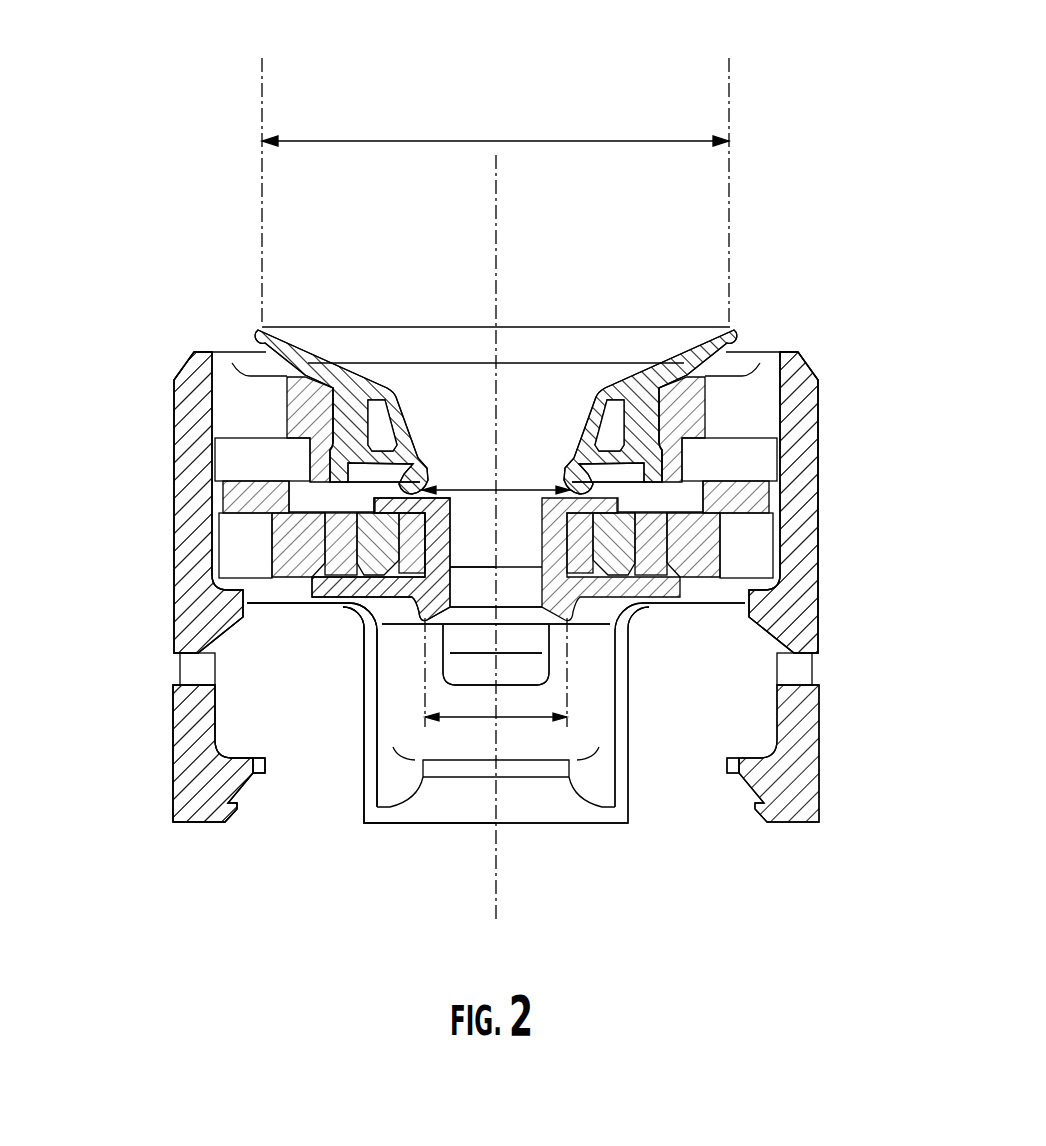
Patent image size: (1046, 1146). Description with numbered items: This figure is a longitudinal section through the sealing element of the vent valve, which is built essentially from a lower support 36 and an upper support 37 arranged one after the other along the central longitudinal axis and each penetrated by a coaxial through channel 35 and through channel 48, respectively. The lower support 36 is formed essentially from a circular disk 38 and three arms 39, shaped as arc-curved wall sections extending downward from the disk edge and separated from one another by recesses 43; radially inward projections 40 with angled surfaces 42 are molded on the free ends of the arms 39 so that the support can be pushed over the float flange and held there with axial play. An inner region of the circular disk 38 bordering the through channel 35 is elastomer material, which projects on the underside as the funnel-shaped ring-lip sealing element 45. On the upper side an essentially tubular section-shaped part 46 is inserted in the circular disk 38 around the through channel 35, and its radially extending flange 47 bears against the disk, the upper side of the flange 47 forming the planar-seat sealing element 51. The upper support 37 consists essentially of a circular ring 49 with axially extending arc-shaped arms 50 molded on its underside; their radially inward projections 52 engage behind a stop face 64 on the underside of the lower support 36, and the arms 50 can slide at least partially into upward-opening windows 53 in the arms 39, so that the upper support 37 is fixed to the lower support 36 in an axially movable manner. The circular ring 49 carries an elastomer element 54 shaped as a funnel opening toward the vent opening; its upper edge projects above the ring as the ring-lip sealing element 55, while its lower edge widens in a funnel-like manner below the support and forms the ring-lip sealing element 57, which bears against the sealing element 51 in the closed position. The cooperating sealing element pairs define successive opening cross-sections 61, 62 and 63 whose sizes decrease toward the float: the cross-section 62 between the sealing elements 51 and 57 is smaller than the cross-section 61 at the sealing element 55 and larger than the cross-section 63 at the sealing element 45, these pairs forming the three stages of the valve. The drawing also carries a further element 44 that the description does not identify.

The through channel 35 is at (475, 595).
The lower support 36 is at (173, 718).
The upper support 37 is at (798, 462).
The circular disk 38 is at (689, 548).
The arms 39 is at (190, 747).
The projections 40 is at (234, 771).
The angled surfaces 42 is at (210, 820).
The recesses 43 is at (362, 695).
The boss 44 is at (421, 532).
The sealing element 45 is at (392, 640).
The tubular section-shaped part 46 is at (553, 538).
The flange 47 is at (390, 497).
The through channel 48 is at (563, 398).
The circular ring 49 is at (242, 402).
The arms 50 is at (200, 473).
The sealing element 51 is at (608, 500).
The projections 52 is at (230, 607).
The windows 53 is at (193, 670).
The elastomer element 54 is at (522, 432).
The sealing element 55 is at (302, 337).
The sealing element 57 is at (605, 487).
The opening cross-section 61 is at (418, 140).
The opening cross-section 62 is at (481, 487).
The opening cross-section 63 is at (525, 713).
The stop face 64 is at (237, 530).